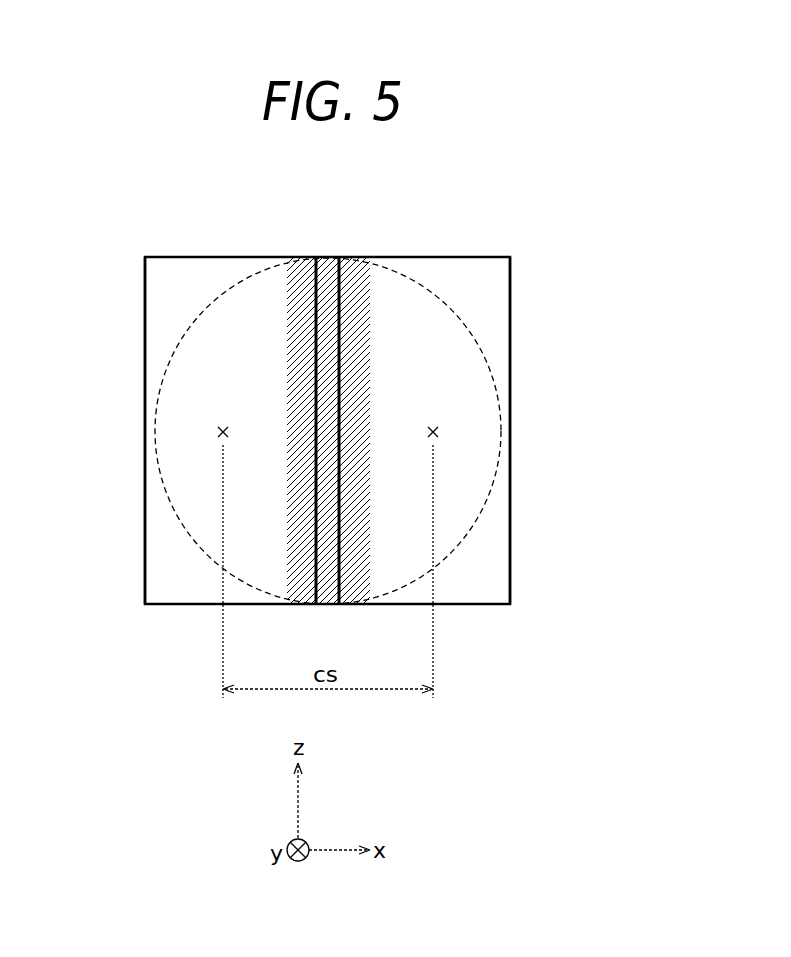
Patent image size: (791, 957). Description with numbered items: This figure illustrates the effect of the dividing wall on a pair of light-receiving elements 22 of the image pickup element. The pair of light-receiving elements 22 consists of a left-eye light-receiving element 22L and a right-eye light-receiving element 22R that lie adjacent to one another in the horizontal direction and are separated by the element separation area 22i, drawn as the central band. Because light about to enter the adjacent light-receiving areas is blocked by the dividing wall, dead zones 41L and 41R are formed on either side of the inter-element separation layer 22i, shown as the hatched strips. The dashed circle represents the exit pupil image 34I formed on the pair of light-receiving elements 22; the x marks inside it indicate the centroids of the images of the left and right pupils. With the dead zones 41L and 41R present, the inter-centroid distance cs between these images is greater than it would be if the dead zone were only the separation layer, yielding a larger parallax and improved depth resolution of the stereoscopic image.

The pair of light-receiving elements 22 is at (525, 500).
The right-eye light-receiving element 22R is at (175, 285).
The left-eye light-receiving element 22L is at (482, 288).
The element separation area 22i is at (330, 273).
The dead zone 41R is at (303, 314).
The dead zone 41L is at (357, 314).
The exit pupil image 34I is at (172, 503).